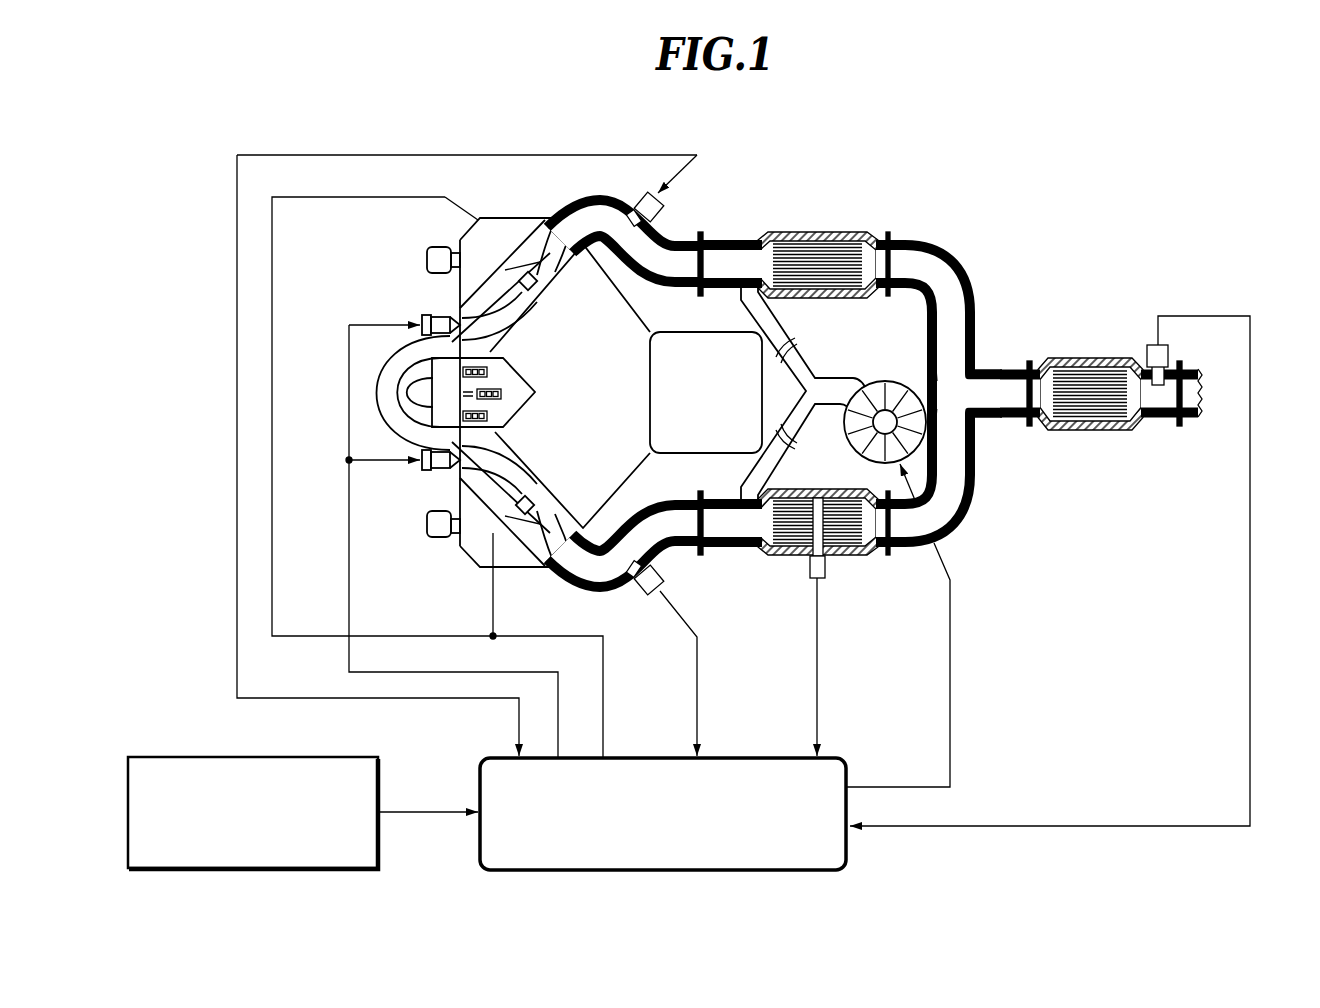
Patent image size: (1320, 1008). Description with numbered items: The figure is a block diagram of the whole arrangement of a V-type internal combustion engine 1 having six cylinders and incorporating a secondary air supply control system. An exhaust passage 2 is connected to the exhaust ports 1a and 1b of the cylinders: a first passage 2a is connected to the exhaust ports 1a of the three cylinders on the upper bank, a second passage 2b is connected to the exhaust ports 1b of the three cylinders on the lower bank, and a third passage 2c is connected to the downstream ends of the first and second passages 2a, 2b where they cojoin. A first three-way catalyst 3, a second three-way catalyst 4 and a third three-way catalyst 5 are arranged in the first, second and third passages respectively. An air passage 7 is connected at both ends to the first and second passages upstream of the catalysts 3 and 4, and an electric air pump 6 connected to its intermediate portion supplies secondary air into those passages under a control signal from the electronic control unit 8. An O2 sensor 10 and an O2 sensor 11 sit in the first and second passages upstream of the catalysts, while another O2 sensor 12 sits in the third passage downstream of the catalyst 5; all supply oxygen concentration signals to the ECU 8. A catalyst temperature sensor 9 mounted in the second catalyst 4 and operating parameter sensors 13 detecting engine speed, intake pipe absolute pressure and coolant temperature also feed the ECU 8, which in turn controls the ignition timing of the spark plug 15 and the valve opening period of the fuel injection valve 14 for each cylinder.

The internal combustion engine 1 is at (538, 150).
The exhaust ports 1a is at (545, 244).
The exhaust ports 1b is at (558, 548).
The exhaust passage 2 is at (986, 260).
The first passage 2a is at (726, 242).
The second passage 2b is at (717, 548).
The third passage 2c is at (1046, 364).
The first three-way catalyst 3 is at (806, 232).
The second three-way catalyst 4 is at (846, 557).
The third three-way catalyst 5 is at (1089, 358).
The electric air pump 6 is at (908, 392).
The air passage 7 is at (807, 364).
The electronic control unit 8 is at (846, 762).
The catalyst temperature sensor 9 is at (823, 563).
The oxygen concentration sensor 10 is at (640, 198).
The oxygen concentration sensor 11 is at (638, 588).
The oxygen concentration sensor 12 is at (1146, 345).
The operating parameter sensors 13 is at (382, 778).
The fuel injection valve 14 is at (421, 317).
The spark plug 15 is at (516, 267).